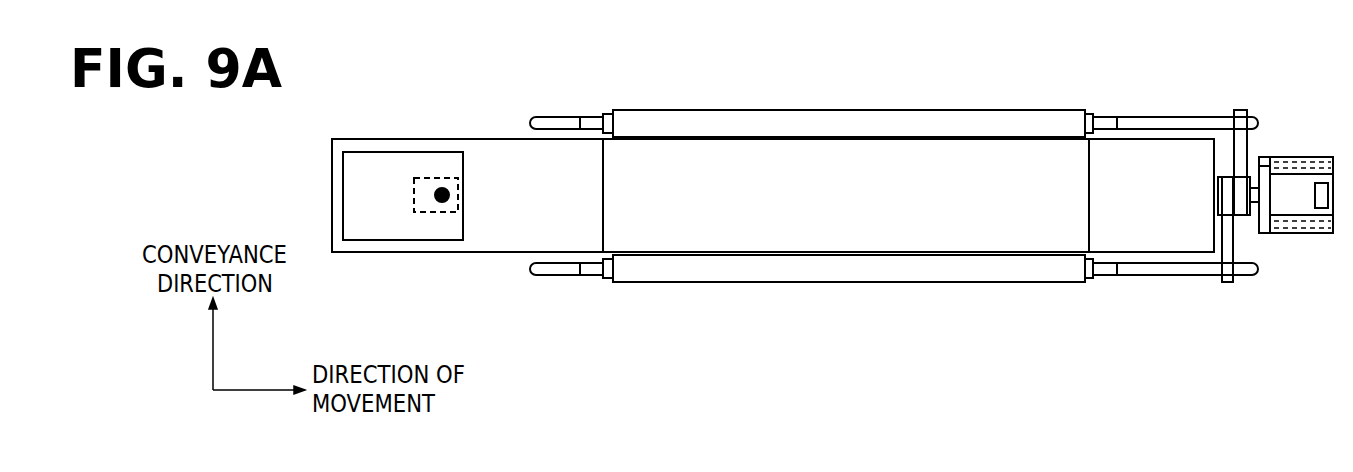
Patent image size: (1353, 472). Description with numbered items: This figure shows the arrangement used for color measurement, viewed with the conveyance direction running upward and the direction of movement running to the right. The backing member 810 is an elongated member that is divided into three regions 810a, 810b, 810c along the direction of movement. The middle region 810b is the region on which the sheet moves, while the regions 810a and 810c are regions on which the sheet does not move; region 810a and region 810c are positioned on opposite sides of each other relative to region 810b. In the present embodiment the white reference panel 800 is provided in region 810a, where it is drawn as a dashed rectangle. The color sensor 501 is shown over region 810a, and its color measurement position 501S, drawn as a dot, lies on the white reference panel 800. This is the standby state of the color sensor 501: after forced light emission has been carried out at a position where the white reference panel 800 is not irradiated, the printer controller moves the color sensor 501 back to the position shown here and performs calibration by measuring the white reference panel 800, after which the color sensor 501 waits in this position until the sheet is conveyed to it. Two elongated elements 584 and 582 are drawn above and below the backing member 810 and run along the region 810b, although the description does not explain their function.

The color sensor 501 is at (367, 190).
The color measurement position 501S is at (441, 203).
The white reference panel 800 is at (421, 178).
The backing member 810 is at (773, 205).
The region 810a is at (498, 238).
The region 810b is at (683, 230).
The region 810c is at (1163, 232).
The lower roller 582 is at (805, 268).
The upper roller 584 is at (690, 120).